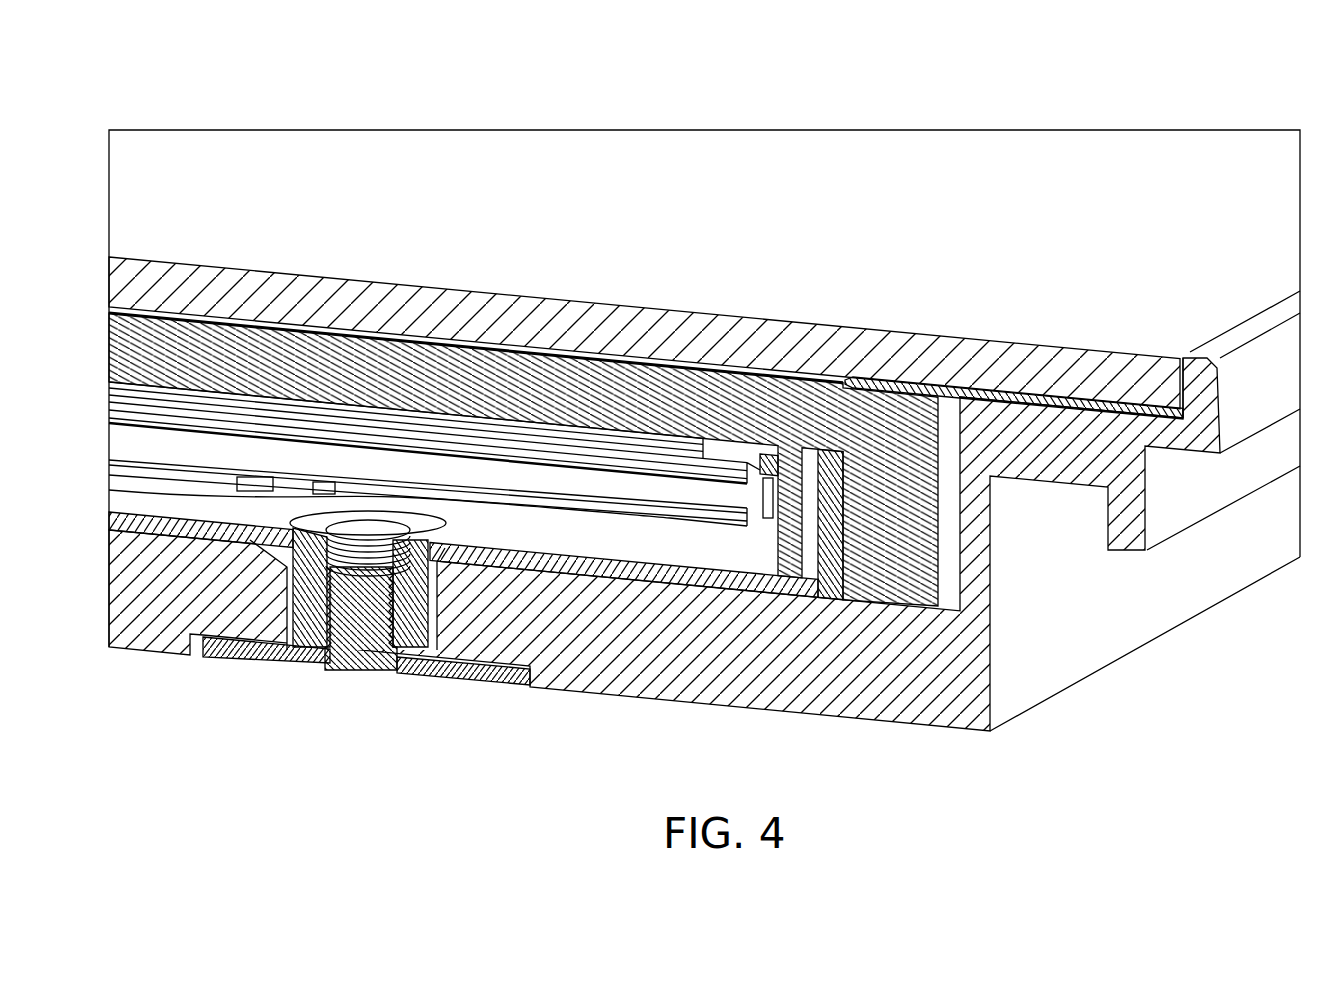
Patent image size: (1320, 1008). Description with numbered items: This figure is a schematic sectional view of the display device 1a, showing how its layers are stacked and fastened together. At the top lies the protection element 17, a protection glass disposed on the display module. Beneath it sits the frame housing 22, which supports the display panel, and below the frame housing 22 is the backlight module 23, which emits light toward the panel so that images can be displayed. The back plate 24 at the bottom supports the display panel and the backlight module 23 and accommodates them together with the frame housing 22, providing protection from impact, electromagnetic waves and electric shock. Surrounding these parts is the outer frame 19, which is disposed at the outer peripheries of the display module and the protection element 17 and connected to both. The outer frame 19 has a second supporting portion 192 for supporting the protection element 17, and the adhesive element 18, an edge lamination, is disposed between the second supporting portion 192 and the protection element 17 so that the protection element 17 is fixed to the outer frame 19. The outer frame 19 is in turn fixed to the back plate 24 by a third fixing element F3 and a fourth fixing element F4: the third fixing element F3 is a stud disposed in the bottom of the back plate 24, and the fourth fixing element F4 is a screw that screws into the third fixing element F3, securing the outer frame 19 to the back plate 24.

The display device 1a is at (152, 103).
The protection element 17 is at (118, 283).
The adhesive element 18 is at (912, 380).
The outer frame 19 is at (120, 606).
The second supporting portion 192 is at (994, 396).
The frame housing 22 is at (118, 357).
The backlight module 23 is at (102, 382).
The back plate 24 is at (120, 524).
The third fixing element F3 is at (404, 652).
The fourth fixing element F4 is at (325, 668).